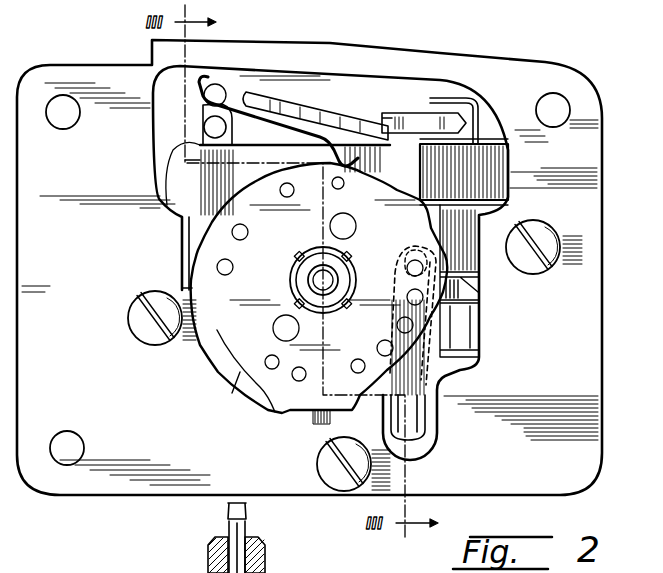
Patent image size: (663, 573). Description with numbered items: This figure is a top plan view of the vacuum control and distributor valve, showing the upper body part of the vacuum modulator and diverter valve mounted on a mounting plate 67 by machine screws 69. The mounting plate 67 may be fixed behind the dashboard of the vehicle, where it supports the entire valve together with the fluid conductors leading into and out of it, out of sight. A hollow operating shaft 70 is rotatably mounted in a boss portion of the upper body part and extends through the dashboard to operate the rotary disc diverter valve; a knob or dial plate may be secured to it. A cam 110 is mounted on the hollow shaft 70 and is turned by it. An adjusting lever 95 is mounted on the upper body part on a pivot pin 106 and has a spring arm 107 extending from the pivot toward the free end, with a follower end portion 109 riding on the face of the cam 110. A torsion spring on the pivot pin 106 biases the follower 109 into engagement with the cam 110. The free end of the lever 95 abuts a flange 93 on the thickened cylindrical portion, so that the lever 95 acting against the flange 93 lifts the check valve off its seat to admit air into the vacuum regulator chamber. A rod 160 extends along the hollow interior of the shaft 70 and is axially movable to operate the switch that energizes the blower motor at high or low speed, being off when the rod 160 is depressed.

The mounting plate 67 is at (138, 483).
The machine screws 69 is at (543, 235).
The hollow operating shaft 70 is at (334, 266).
The flange 93 is at (393, 113).
The adjusting lever 95 is at (315, 120).
The pivot pin 106 is at (200, 128).
The spring arm 107 is at (294, 107).
The follower end portion 109 is at (328, 166).
The cam 110 is at (302, 293).
The rod 160 is at (318, 278).